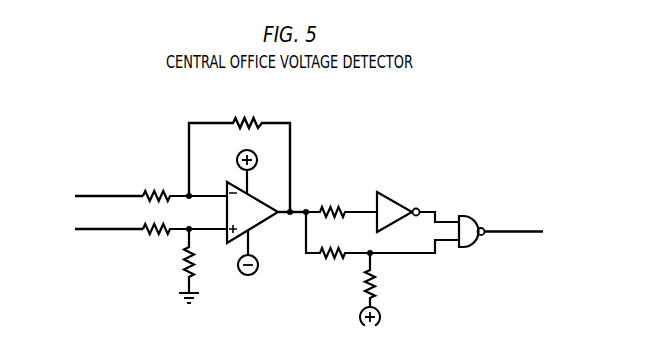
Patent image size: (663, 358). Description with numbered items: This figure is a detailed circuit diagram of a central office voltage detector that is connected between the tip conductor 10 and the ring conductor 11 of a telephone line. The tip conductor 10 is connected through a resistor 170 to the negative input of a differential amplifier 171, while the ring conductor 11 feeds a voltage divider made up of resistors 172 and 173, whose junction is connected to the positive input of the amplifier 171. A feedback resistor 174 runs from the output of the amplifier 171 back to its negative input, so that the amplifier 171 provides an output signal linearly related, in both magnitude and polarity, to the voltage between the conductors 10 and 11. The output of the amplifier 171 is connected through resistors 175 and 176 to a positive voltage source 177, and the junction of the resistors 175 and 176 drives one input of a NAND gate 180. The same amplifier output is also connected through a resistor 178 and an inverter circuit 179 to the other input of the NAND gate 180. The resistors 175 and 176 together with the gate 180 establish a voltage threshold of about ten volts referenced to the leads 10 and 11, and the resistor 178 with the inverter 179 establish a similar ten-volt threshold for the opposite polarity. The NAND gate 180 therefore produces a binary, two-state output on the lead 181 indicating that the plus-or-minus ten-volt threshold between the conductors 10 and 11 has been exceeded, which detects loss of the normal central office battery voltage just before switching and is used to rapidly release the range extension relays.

The tip conductor 10 is at (101, 196).
The ring conductor 11 is at (101, 229).
The resistor 170 is at (185, 183).
The differential amplifier 171 is at (256, 192).
The resistor 172 is at (185, 241).
The resistor 173 is at (202, 264).
The feedback resistor 174 is at (238, 152).
The resistor 175 is at (382, 235).
The resistor 176 is at (385, 278).
The positive voltage source 177 is at (382, 317).
The resistor 178 is at (341, 198).
The inverter circuit 179 is at (418, 203).
The NAND gate 180 is at (472, 218).
The output lead 181 is at (505, 232).